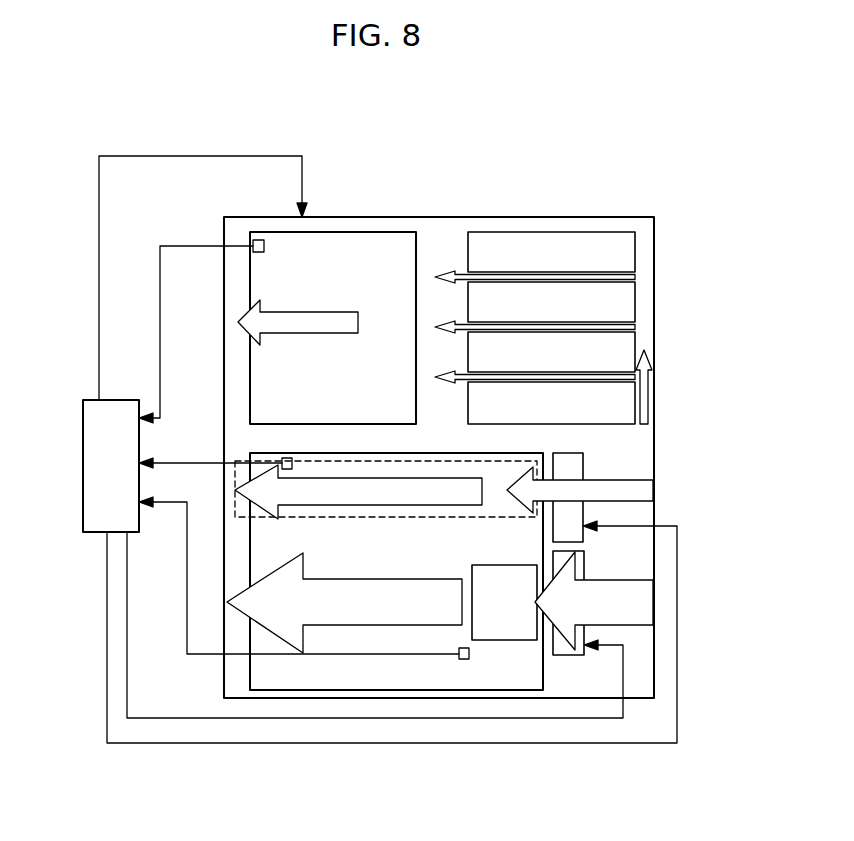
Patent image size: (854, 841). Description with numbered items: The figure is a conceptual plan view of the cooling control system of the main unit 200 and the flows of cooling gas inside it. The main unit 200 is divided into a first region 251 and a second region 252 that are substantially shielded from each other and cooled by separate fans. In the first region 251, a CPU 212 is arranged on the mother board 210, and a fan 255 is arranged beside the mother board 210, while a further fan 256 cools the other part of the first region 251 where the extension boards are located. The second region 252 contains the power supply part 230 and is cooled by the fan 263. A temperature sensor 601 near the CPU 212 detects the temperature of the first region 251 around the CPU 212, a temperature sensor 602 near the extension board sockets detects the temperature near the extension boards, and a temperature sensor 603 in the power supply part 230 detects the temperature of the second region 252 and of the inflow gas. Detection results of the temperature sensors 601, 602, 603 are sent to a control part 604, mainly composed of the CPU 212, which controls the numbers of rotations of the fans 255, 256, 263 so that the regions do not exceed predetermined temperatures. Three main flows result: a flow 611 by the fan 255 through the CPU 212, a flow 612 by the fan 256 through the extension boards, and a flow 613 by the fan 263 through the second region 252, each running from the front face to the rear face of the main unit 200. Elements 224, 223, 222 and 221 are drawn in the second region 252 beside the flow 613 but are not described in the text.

The main unit 200 is at (470, 201).
The power supply part 230 is at (333, 292).
The fan 263 is at (356, 240).
The second region 252 is at (292, 292).
The first region 251 is at (343, 618).
The mother board 210 is at (410, 680).
The CPU 212 is at (513, 630).
The sheet tray 224 is at (630, 253).
The sheet tray 223 is at (630, 305).
The sheet tray 222 is at (630, 346).
The sheet tray 221 is at (630, 403).
The fan 256 is at (580, 465).
The fan 255 is at (580, 566).
The temperature sensor 601 is at (464, 659).
The temperature sensor 602 is at (280, 458).
The temperature sensor 603 is at (258, 240).
The flow of the cooling gas 611 is at (347, 622).
The flow of the cooling gas 612 is at (358, 495).
The flow of the cooling gas 613 is at (257, 318).
The control part 604 is at (97, 534).